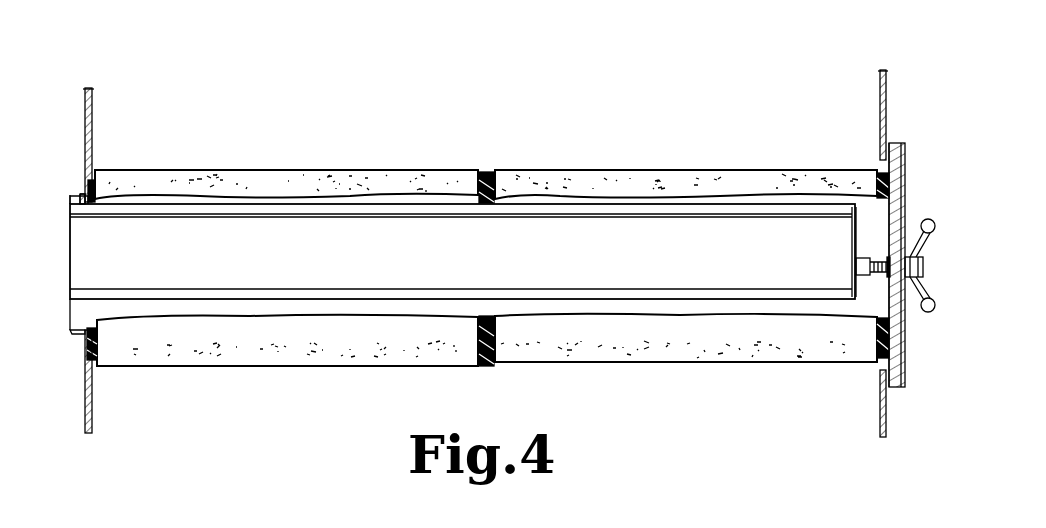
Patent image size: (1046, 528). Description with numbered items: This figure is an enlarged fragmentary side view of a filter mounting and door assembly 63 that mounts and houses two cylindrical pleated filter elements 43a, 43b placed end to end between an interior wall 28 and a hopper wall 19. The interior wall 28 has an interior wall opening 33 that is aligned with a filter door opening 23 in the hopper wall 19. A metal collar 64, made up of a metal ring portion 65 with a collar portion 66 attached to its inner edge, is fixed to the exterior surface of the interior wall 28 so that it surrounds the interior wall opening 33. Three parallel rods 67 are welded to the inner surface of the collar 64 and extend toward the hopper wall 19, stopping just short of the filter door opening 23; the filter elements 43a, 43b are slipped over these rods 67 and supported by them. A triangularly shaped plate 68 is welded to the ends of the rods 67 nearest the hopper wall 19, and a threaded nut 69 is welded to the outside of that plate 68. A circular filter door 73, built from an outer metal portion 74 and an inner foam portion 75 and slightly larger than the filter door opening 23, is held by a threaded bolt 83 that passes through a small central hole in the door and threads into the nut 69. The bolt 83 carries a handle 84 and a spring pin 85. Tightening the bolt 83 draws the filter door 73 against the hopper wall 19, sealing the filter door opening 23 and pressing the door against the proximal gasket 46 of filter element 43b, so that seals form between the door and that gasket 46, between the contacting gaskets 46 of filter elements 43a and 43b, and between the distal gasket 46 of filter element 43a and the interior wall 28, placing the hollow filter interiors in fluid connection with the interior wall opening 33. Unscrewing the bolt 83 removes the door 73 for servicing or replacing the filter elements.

The hopper wall 19 is at (886, 80).
The filter door opening 23 is at (944, 286).
The interior wall 28 is at (92, 92).
The interior wall opening 33 is at (70, 253).
The filter element 43a is at (286, 250).
The filter element 43b is at (686, 248).
The gasket 46 is at (92, 180).
The filter mounting and door assembly 63 is at (458, 118).
The metal collar 64 is at (73, 200).
The metal ring portion 65 is at (86, 345).
The collar portion 66 is at (78, 334).
The rods 67 is at (206, 289).
The triangularly shaped plate 68 is at (857, 252).
The threaded nut 69 is at (867, 277).
The filter door 73 is at (906, 163).
The outer metal portion 74 is at (904, 147).
The inner foam portion 75 is at (893, 146).
The threaded bolt 83 is at (924, 269).
The handle 84 is at (937, 223).
The spring pin 85 is at (910, 283).